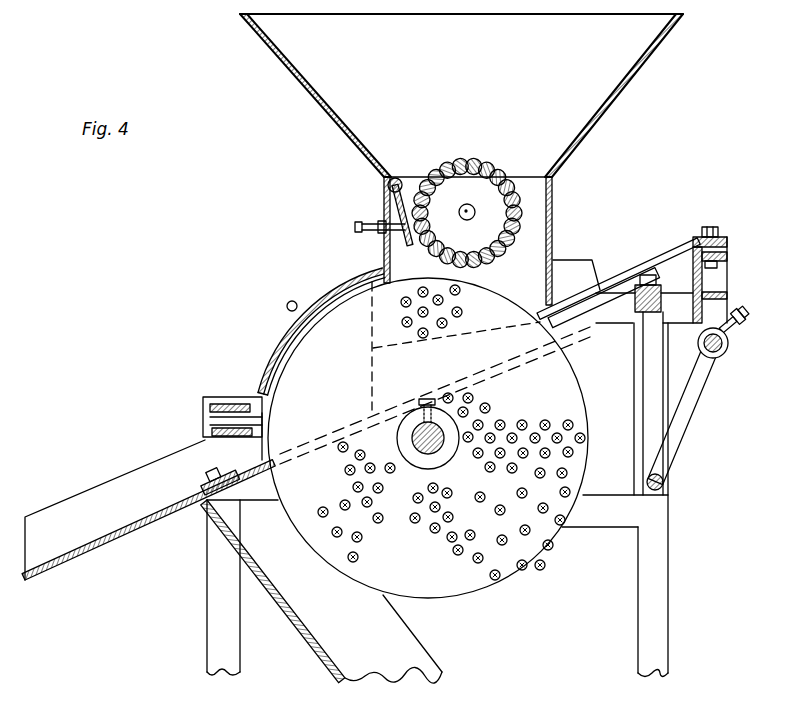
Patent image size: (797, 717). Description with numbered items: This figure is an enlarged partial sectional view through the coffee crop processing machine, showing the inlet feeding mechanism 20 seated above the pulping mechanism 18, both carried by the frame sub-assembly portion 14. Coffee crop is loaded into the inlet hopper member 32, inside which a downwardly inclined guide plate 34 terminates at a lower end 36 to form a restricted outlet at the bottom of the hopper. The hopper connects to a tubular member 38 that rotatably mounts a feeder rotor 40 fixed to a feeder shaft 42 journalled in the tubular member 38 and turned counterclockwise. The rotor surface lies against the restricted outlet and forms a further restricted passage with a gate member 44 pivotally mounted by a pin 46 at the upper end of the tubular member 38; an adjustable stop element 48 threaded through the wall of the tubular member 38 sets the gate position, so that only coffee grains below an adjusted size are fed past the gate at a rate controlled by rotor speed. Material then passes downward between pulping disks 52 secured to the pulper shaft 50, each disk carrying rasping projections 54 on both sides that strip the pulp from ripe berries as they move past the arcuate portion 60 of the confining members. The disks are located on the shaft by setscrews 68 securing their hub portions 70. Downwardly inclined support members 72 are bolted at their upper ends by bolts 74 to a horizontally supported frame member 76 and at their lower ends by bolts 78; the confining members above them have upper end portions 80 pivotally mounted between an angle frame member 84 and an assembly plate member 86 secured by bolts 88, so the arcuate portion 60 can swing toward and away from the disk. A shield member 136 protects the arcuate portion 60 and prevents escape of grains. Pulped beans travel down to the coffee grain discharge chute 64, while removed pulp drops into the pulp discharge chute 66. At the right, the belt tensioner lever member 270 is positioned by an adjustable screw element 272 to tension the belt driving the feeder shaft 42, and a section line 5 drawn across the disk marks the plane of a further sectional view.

The frame sub-assembly portion 14 is at (643, 485).
The pulping mechanism 18 is at (230, 358).
The inlet feeding mechanism 20 is at (459, 159).
The inlet hopper member 32 is at (308, 97).
The downwardly inclined guide plate 34 is at (572, 97).
The lower end 36 is at (477, 193).
The tubular member 38 is at (552, 210).
The feeder rotor 40 is at (500, 173).
The feeder shaft 42 is at (468, 220).
The gate member 44 is at (398, 208).
The pin 46 is at (387, 184).
The adjustable stop element 48 is at (367, 233).
The pulper shaft 50 is at (428, 445).
The pulping disks 52 is at (533, 565).
The rasping projections 54 is at (542, 512).
The arcuate portion 60 is at (312, 325).
The coffee grain discharge chute 64 is at (56, 518).
The pulp discharge chute 66 is at (370, 655).
The setscrews 68 is at (424, 398).
The hub portions 70 is at (398, 433).
The support members 72 is at (578, 330).
The bolts 74 is at (643, 285).
The horizontally supported frame member 76 is at (632, 326).
The bolts 78 is at (210, 472).
The upper end portions 80 is at (715, 249).
The angle frame member 84 is at (706, 282).
The assembly plate member 86 is at (722, 230).
The bolts 88 is at (710, 227).
The shield member 136 is at (340, 292).
The lever member 270 is at (686, 421).
The adjustable screw element 272 is at (733, 330).
The section line 5- 5 is at (248, 385).